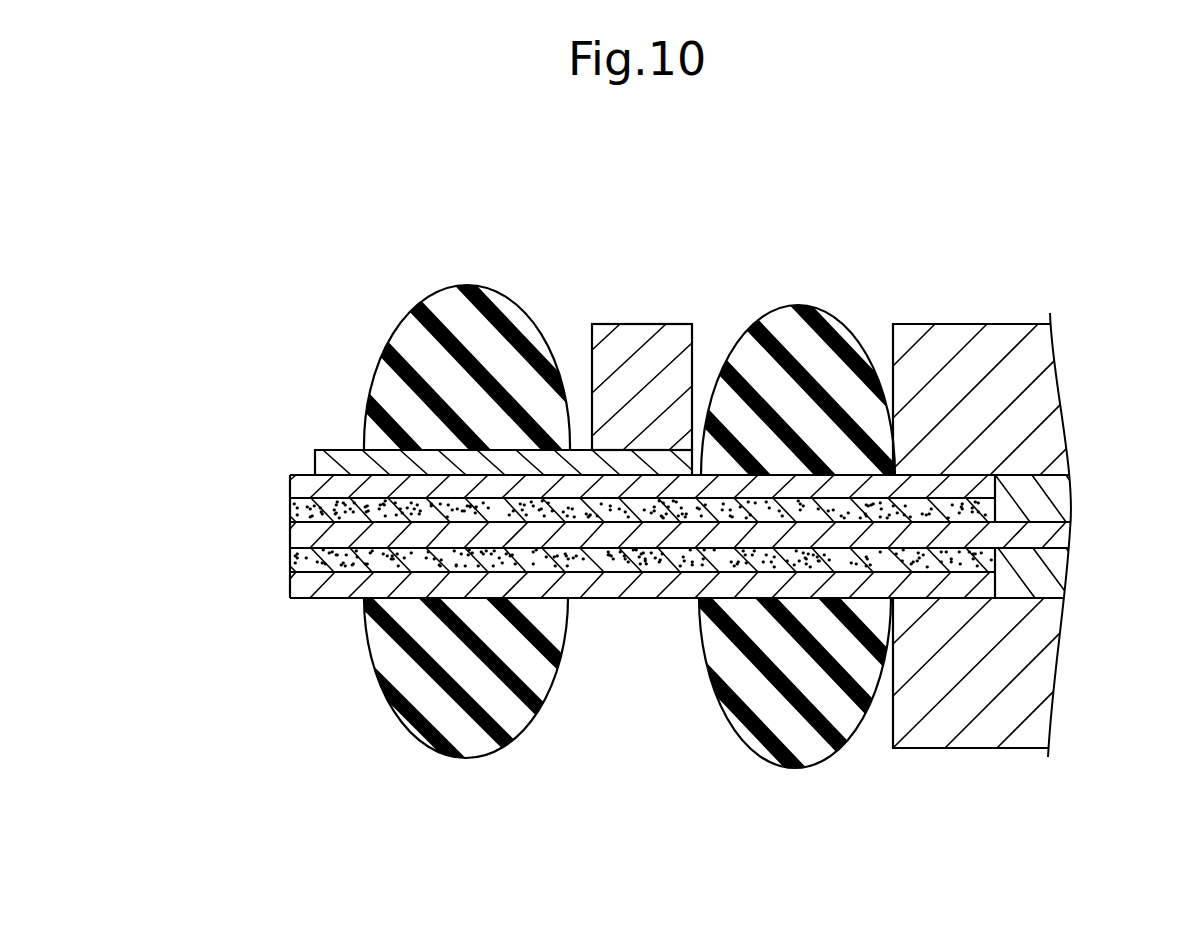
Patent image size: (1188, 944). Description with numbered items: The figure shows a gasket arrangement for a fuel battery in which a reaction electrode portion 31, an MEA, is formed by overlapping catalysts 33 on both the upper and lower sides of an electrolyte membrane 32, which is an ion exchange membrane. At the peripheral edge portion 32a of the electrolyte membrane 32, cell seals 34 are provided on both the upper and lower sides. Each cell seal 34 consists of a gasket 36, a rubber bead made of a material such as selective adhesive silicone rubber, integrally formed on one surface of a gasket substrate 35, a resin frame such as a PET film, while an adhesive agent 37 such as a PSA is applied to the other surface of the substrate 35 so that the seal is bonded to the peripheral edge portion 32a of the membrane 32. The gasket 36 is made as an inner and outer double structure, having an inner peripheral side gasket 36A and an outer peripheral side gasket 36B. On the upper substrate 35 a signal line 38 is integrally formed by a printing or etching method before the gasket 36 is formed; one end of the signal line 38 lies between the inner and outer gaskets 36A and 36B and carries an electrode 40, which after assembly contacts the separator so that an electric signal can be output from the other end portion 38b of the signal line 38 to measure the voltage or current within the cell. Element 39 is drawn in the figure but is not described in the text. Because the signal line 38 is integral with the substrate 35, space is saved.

The reaction electrode portion 31 is at (1068, 483).
The electrolyte membrane 32 is at (1043, 538).
The peripheral edge portion 32a is at (305, 533).
The catalyst 33 is at (1050, 507).
The cell seal 34 is at (500, 287).
The gasket substrate 35 is at (405, 488).
The gasket 36 is at (794, 523).
The inner peripheral side gasket 36A is at (790, 337).
The outer peripheral side gasket 36B is at (462, 330).
The adhesive agent 37 is at (317, 510).
The signal line 38 is at (528, 468).
The other end portion of the signal line 38b is at (330, 462).
The resist layer 39 is at (978, 357).
The electrode 40 is at (626, 350).